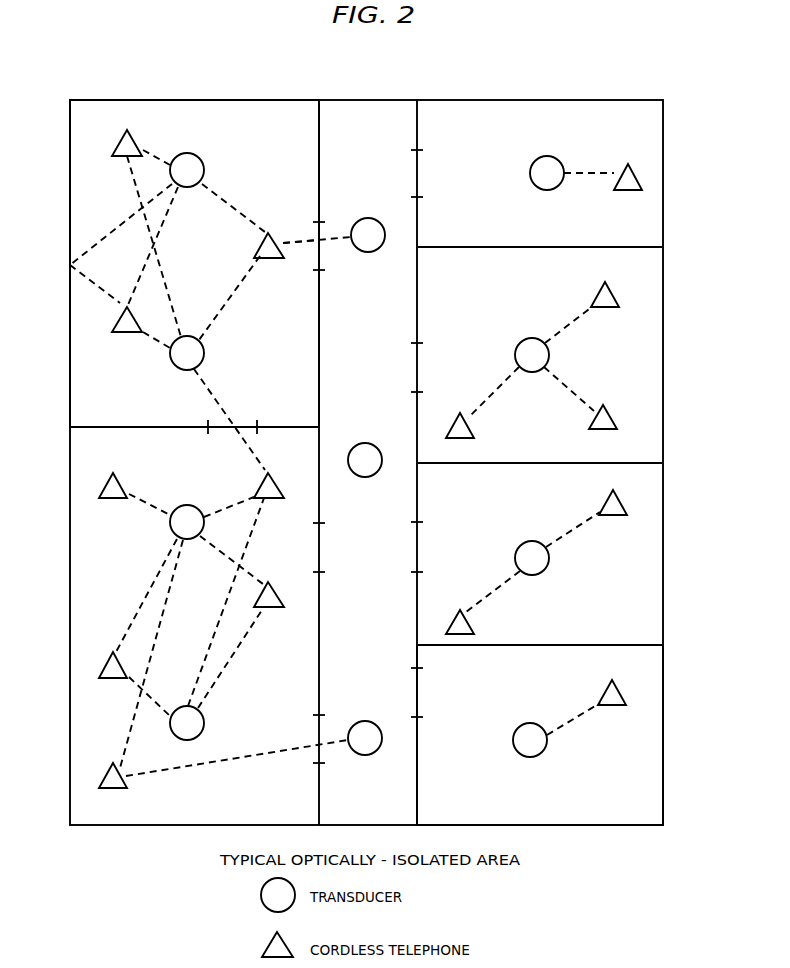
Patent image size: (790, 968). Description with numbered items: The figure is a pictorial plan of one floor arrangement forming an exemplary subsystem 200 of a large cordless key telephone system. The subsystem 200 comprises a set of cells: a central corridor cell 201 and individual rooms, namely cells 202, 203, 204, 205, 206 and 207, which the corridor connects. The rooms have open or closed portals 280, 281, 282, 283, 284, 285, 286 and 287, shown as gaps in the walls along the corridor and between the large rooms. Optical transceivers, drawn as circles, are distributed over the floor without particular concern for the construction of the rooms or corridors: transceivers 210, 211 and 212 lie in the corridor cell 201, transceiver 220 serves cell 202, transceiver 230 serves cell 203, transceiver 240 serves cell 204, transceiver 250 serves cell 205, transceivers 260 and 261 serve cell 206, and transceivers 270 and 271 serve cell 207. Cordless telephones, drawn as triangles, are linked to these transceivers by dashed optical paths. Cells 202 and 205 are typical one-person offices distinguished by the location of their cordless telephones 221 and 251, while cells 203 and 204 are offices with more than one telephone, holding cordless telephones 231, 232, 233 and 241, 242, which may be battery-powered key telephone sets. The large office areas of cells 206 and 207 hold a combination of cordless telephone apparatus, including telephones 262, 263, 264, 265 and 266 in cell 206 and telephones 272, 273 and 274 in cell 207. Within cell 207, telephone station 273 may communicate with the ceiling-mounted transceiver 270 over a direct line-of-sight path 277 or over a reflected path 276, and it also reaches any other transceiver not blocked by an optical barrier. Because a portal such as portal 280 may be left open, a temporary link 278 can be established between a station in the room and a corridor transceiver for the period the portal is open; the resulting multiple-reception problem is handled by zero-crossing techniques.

The subsystem 200 is at (278, 99).
The corridor cell 201 is at (385, 101).
The cell 202 is at (663, 131).
The cell 203 is at (663, 337).
The cell 204 is at (663, 547).
The cell 205 is at (655, 733).
The cell 206 is at (68, 610).
The cell 207 is at (68, 342).
The optical transceiver 210 is at (370, 218).
The optical transceiver 211 is at (368, 443).
The optical transceiver 212 is at (368, 721).
The optical transceiver 220 is at (552, 159).
The cordless telephone 221 is at (628, 191).
The optical transceiver 230 is at (530, 339).
The cordless telephone 231 is at (609, 287).
The cordless telephone 232 is at (606, 410).
The cordless telephone 233 is at (471, 435).
The optical transceiver 240 is at (530, 542).
The cordless telephone 241 is at (616, 494).
The cordless telephone 242 is at (452, 620).
The optical transceiver 250 is at (519, 729).
The cordless telephone 251 is at (615, 685).
The optical transceiver 260 is at (187, 505).
The optical transceiver 261 is at (198, 722).
The cordless telephone 262 is at (125, 785).
The cordless telephone 263 is at (106, 661).
The cordless telephone 264 is at (271, 594).
The cordless telephone 265 is at (271, 482).
The cordless telephone 266 is at (110, 484).
The optical transceiver 270 is at (202, 162).
The optical transceiver 271 is at (203, 366).
The cordless telephone 272 is at (272, 236).
The telephone station 273 is at (127, 333).
The cordless telephone 274 is at (135, 143).
The reflected path 276 is at (100, 293).
The line-of-sight path 277 is at (176, 203).
The link 278 is at (297, 250).
The portal 280 is at (322, 252).
The portal 281 is at (243, 424).
The portal 282 is at (320, 540).
The portal 283 is at (418, 550).
The portal 284 is at (418, 692).
The portal 285 is at (312, 726).
The portal 286 is at (418, 364).
The portal 287 is at (418, 178).